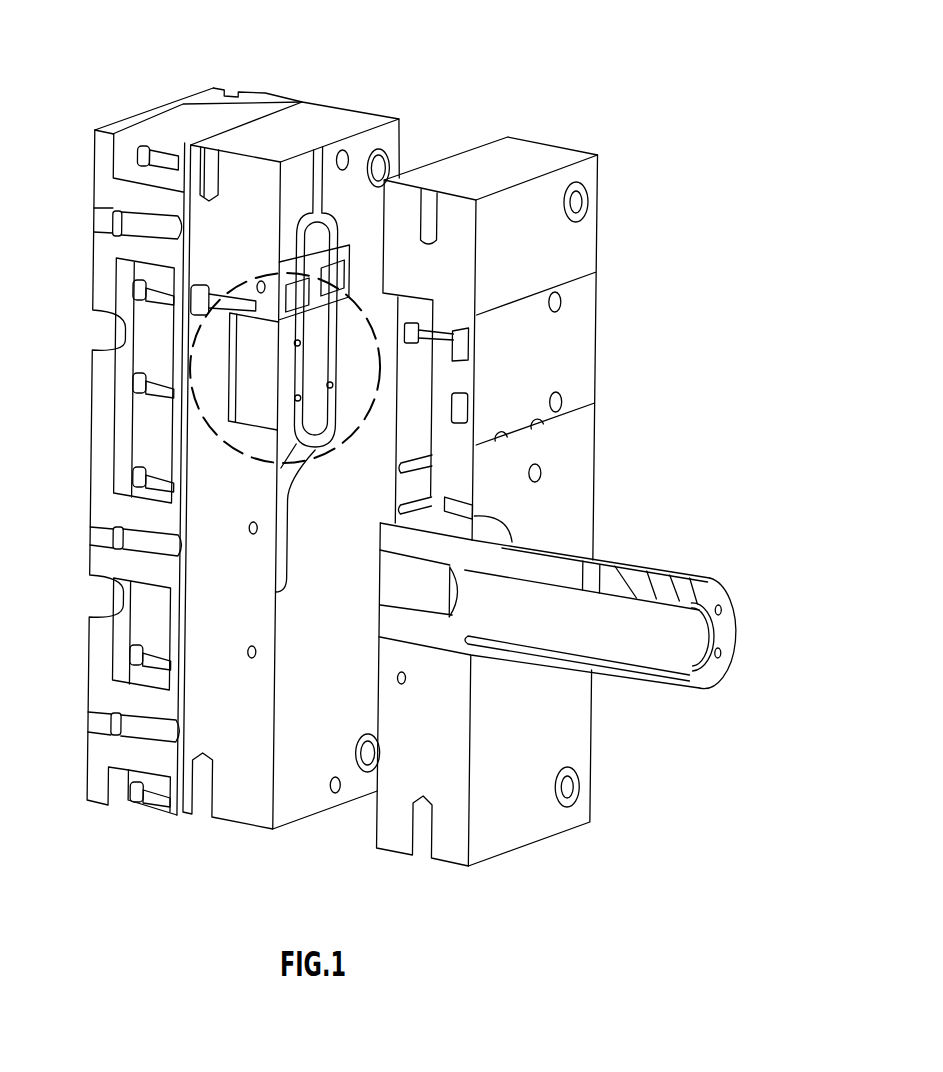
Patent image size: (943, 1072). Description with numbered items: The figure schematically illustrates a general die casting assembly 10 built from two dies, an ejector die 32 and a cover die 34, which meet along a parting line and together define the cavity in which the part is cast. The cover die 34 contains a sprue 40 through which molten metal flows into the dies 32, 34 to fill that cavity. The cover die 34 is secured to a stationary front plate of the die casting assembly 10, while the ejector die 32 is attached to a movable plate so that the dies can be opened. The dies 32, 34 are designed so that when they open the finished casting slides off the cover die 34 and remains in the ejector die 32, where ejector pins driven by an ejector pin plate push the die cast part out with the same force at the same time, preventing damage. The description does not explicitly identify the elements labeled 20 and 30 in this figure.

The die casting assembly 10 is at (387, 466).
The lower mold block 20 is at (457, 843).
The connector region 30 is at (258, 275).
The ejector die 32 is at (250, 365).
The cover die 34 is at (547, 351).
The sprue 40 is at (677, 632).